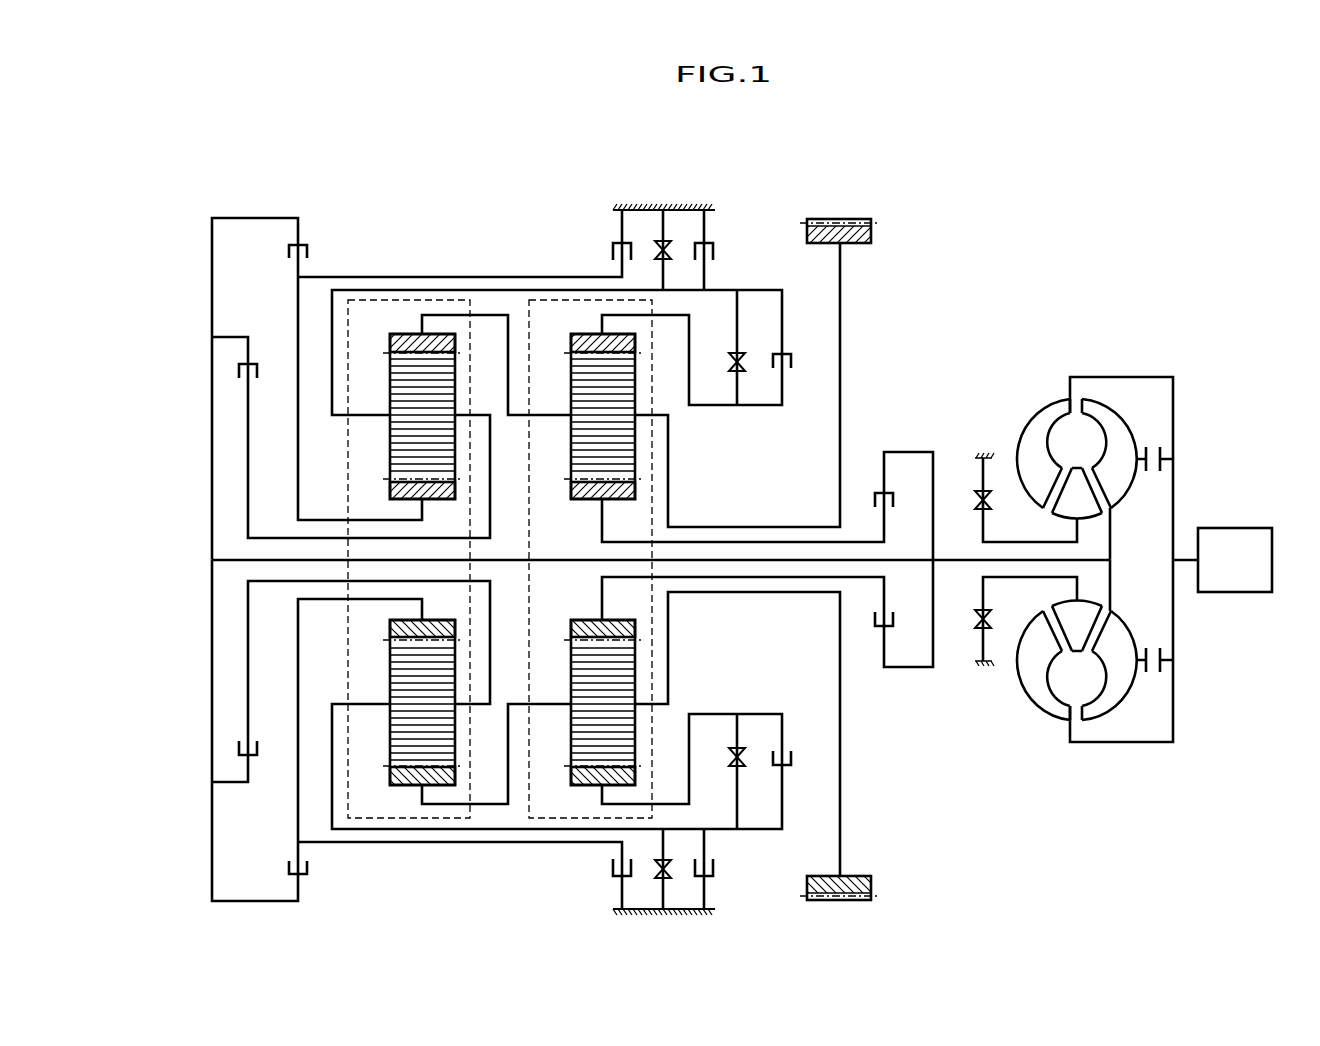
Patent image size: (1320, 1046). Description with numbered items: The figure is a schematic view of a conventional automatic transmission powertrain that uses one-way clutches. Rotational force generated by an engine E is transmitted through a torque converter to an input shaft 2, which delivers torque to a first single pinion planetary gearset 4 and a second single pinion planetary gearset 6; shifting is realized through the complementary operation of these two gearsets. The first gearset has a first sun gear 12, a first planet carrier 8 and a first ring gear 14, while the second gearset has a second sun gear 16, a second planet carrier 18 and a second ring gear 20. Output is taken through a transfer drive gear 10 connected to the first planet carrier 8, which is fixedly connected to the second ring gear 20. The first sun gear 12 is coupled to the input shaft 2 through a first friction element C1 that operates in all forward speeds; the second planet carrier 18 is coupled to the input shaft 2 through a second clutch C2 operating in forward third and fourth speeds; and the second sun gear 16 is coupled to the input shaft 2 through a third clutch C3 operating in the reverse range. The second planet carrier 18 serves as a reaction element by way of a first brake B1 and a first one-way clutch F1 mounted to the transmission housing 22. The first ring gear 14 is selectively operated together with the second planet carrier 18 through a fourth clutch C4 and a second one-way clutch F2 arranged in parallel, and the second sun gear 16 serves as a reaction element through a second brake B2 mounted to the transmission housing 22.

The input shaft 2 is at (960, 565).
The first single pinion planetary gearset 4 is at (587, 516).
The second single pinion planetary gearset 6 is at (547, 538).
The planet carrier 8 is at (648, 418).
The transfer drive gear 10 is at (828, 247).
The sun gear 12 is at (577, 500).
The ring gear 14 is at (576, 340).
The sun gear 16 is at (388, 493).
The planet carrier 18 is at (370, 416).
The ring gear 20 is at (392, 338).
The transmission housing 22 is at (709, 205).
The first friction element C1 is at (899, 559).
The second clutch C2 is at (264, 559).
The third clutch C3 is at (314, 555).
The fourth clutch C4 is at (797, 558).
The first brake B1 is at (718, 559).
The second brake B2 is at (477, 559).
The first one-way clutch F1 is at (676, 559).
The second one-way clutch F2 is at (722, 559).
The engine E is at (1235, 560).